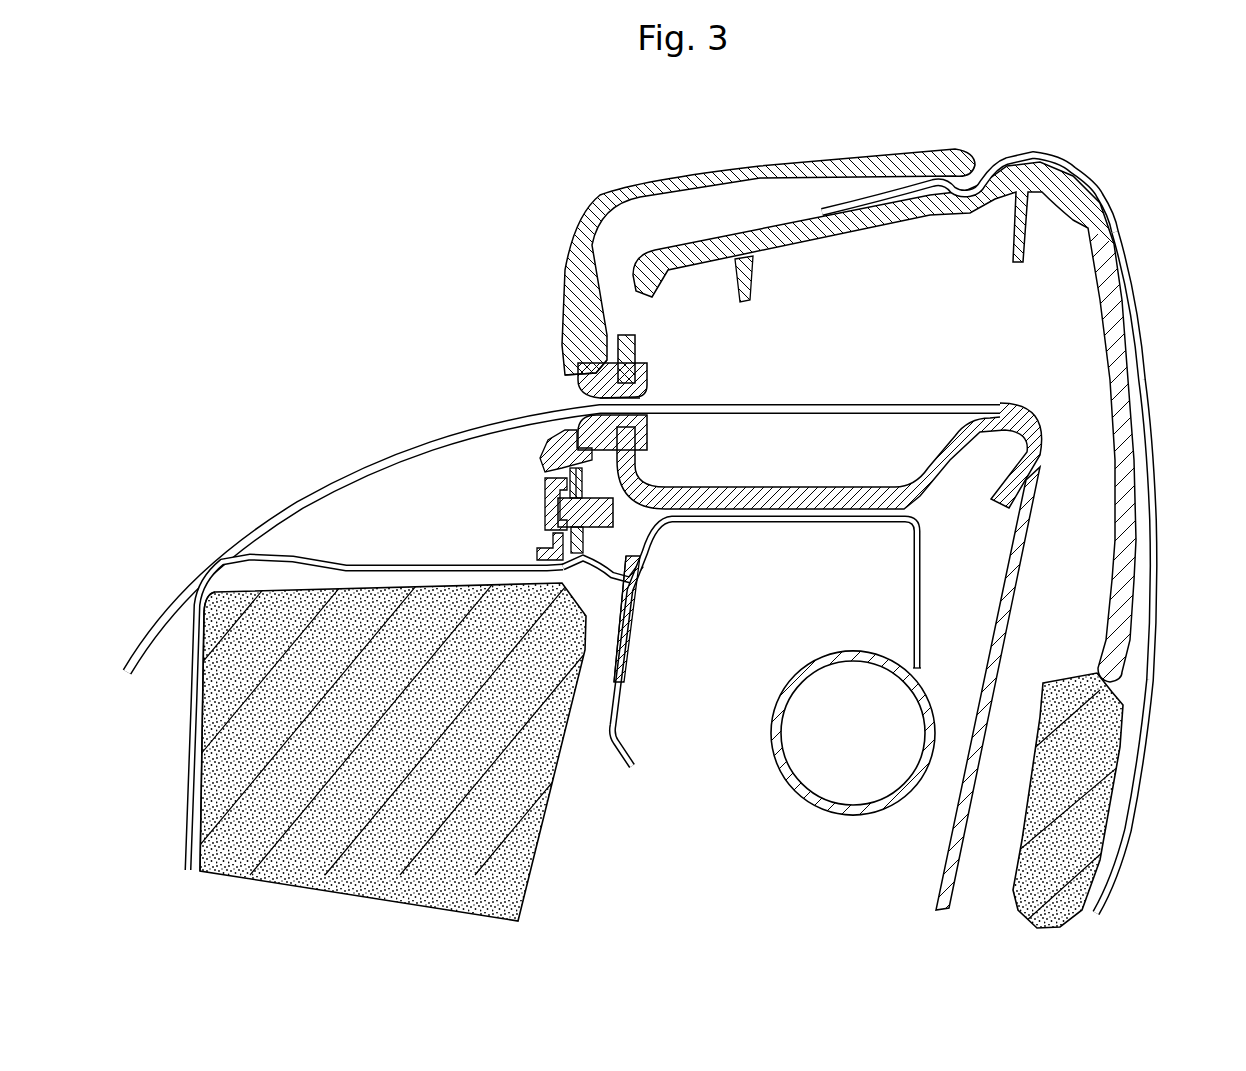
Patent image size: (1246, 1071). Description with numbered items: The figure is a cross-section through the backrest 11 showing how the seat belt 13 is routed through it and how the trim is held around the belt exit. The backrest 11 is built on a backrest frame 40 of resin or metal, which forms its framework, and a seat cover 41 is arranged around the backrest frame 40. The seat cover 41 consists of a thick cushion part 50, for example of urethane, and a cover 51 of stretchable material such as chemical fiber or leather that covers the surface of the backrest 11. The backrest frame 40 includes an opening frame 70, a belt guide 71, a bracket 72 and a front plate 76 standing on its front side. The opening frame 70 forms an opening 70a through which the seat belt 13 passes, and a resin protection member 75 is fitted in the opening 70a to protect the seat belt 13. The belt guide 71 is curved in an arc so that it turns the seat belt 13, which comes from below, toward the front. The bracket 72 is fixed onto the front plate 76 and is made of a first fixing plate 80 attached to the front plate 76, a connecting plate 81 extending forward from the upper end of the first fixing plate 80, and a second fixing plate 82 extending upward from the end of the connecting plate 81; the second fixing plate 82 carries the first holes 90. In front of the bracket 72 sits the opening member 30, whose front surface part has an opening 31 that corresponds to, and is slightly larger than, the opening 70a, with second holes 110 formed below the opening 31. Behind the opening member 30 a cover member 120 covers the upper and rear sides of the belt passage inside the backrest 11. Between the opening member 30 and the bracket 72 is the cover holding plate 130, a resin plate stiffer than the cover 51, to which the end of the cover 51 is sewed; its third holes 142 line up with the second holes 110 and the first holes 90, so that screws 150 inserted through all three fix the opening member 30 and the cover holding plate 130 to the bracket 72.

The backrest 11 is at (1016, 127).
The seat belt 13 is at (396, 442).
The opening member 30 is at (757, 152).
The opening 31 is at (566, 384).
The backrest frame 40 is at (962, 575).
The seat cover 41 is at (166, 738).
The cushion part 50 is at (230, 800).
The cover 51 is at (322, 558).
The opening frame 70 is at (640, 350).
The opening 70a is at (652, 400).
The belt guide 71 is at (1012, 418).
The bracket 72 is at (615, 644).
The protection member 75 is at (650, 386).
The front plate 76 is at (646, 655).
The first fixing plate 80 is at (634, 612).
The connecting plate 81 is at (612, 576).
The second fixing plate 82 is at (588, 545).
The first hole 90 is at (615, 512).
The second hole 110 is at (572, 478).
The cover member 120 is at (1102, 238).
The cover holding plate 130 is at (556, 485).
The third hole 142 is at (540, 540).
The screw 150 is at (550, 455).